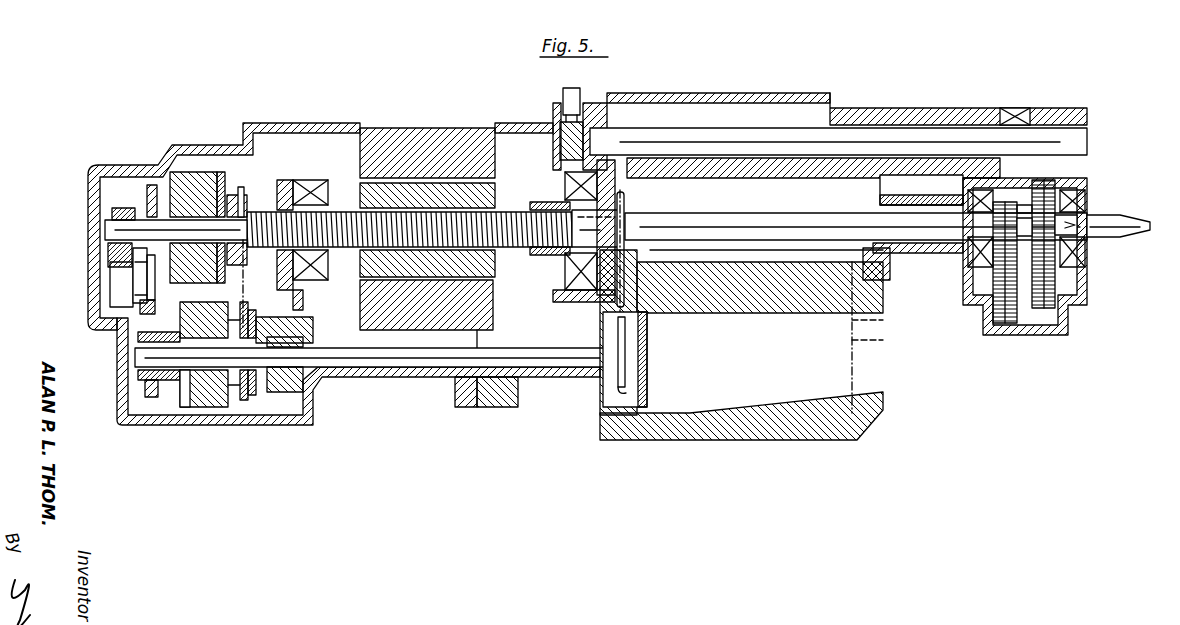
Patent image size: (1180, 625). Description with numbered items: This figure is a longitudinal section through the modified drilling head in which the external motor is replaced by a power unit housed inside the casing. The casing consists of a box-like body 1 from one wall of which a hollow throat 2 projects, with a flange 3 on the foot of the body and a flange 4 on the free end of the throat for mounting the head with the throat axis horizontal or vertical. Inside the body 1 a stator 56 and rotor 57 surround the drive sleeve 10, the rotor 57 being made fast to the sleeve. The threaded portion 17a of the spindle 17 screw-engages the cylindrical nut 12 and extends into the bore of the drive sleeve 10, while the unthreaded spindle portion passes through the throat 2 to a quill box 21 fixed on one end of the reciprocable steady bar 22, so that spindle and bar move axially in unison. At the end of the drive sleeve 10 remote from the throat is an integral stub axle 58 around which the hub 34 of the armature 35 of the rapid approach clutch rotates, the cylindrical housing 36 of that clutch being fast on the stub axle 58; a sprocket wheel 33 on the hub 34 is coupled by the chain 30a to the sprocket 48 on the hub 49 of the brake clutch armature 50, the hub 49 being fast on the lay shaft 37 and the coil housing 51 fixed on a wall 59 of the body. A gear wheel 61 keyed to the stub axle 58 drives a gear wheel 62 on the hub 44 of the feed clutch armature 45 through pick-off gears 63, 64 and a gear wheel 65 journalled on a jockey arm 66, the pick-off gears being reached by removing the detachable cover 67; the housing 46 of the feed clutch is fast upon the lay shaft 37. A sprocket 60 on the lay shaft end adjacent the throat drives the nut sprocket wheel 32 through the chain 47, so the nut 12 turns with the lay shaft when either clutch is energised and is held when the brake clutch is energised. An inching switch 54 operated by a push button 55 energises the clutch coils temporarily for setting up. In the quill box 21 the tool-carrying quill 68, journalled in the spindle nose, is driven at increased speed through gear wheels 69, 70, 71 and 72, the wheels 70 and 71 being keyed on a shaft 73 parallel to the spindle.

The box-like body 1 is at (330, 128).
The hollow throat 2 is at (710, 298).
The flange 3 is at (665, 425).
The flange 4 is at (873, 350).
The drive sleeve 10 is at (358, 250).
The cylindrical nut 12 is at (535, 205).
The spindle 17 is at (925, 240).
The threaded portion 17a is at (328, 210).
The quill box 21 is at (1085, 172).
The steady bar 22 is at (612, 140).
The chain 30a is at (248, 298).
The sprocket wheel 32 is at (590, 288).
The sprocket wheel 33 is at (242, 187).
The hub 34 is at (236, 195).
The armature 35 is at (222, 172).
The cylindrical housing 36 is at (180, 172).
The lay shaft 37 is at (358, 352).
The hub 44 is at (167, 382).
The armature 45 is at (207, 400).
The cylindrical housing 46 is at (218, 395).
The chain 47 is at (562, 348).
The sprocket 48 is at (250, 312).
The hub 49 is at (245, 385).
The armature 50 is at (255, 385).
The cylindrical housing 51 is at (287, 388).
The inching switch 54 is at (560, 135).
The push button 55 is at (570, 88).
The stator 56 is at (372, 140).
The rotor 57 is at (495, 268).
The stub axle 58 is at (118, 228).
The wall 59 is at (313, 334).
The sprocket 60 is at (628, 370).
The gear wheel 61 is at (150, 185).
The gear wheel 62 is at (152, 398).
The pick-off gear 63 is at (147, 268).
The pick-off gear 64 is at (147, 318).
The gear wheel 65 is at (150, 295).
The jockey arm 66 is at (133, 295).
The detachable cover 67 is at (120, 350).
The tool-carrying quill 68 is at (1100, 222).
The gear wheel 69 is at (1022, 206).
The gear wheel 70 is at (1005, 323).
The gear wheel 71 is at (1045, 308).
The gear wheel 72 is at (1087, 195).
The shaft 73 is at (1078, 286).